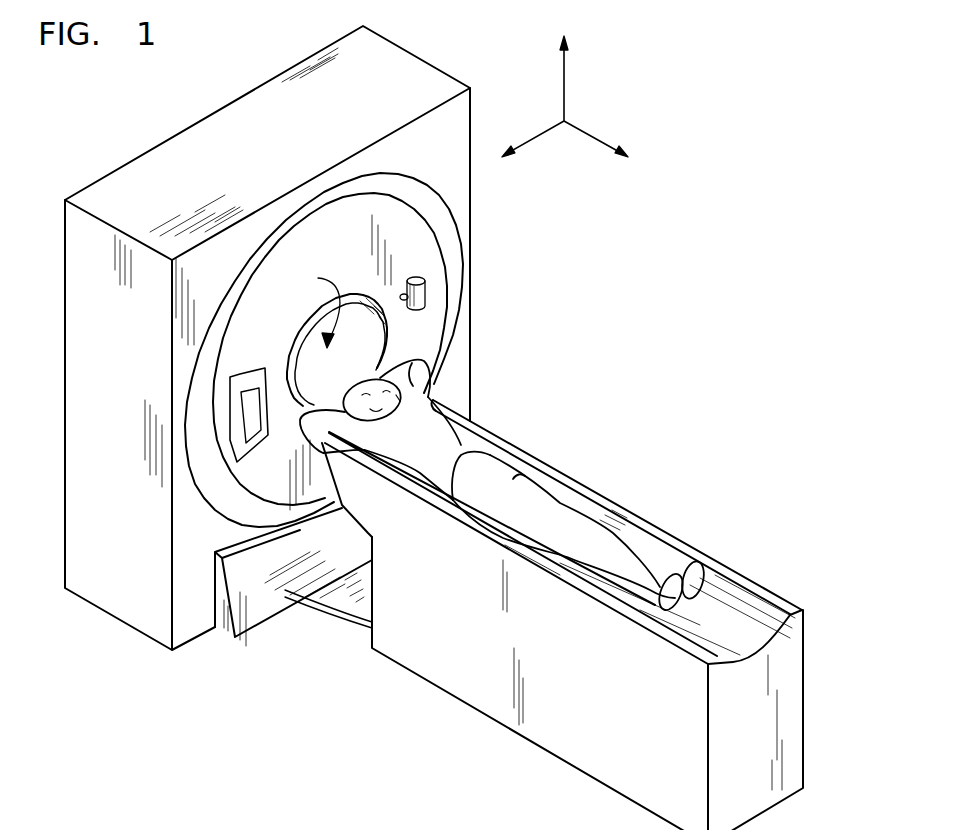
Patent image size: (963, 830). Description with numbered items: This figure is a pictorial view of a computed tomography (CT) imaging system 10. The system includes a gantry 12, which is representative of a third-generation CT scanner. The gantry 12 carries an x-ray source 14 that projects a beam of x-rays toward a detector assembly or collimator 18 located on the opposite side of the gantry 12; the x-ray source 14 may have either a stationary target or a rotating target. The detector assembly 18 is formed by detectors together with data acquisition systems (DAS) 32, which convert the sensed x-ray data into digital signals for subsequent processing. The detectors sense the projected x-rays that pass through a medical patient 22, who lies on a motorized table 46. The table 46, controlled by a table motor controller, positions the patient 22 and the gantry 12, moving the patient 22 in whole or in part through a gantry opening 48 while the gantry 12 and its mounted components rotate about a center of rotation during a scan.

The computed tomography (CT) imaging system 10 is at (612, 300).
The gantry 12 is at (440, 257).
The x-ray source 14 is at (428, 295).
The detector assembly or collimator 18 is at (252, 445).
The medical patient 22 is at (467, 440).
The data acquisition systems (DAS) 32 is at (252, 367).
The motorized table 46 is at (605, 760).
The gantry opening 48 is at (314, 306).